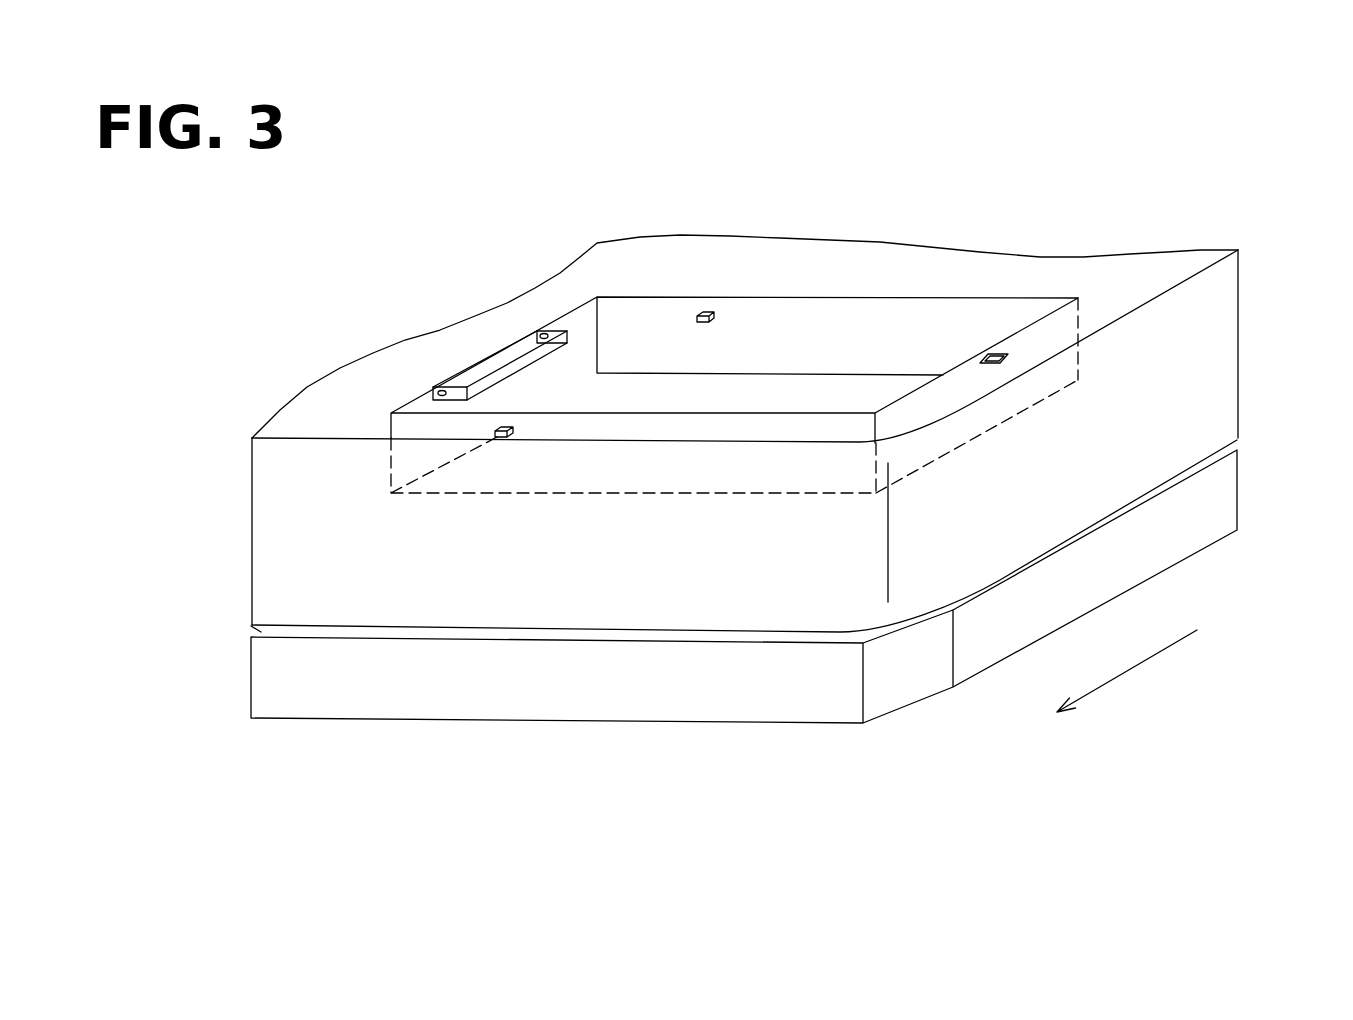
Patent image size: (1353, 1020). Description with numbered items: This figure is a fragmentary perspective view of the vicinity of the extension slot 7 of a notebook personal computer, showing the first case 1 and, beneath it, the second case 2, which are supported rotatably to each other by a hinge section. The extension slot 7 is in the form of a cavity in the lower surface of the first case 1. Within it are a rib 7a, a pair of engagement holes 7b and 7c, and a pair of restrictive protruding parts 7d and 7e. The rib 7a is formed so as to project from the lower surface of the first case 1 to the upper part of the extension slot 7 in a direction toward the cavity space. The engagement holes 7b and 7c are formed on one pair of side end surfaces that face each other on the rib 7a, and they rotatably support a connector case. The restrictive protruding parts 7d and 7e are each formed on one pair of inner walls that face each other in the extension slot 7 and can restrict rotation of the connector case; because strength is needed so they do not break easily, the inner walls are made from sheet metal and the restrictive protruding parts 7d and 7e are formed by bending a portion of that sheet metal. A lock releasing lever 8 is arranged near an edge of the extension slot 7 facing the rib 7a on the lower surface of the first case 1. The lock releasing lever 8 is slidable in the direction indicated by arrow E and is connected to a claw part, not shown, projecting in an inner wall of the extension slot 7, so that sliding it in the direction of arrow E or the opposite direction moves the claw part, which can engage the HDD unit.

The first case 1 is at (1215, 368).
The second case 2 is at (1213, 497).
The extension slot 7 is at (863, 297).
The rib 7a is at (523, 364).
The engagement hole 7b is at (433, 389).
The engagement hole 7c is at (540, 331).
The restrictive protruding part 7d is at (497, 432).
The restrictive protruding part 7e is at (705, 311).
The lock releasing lever 8 is at (990, 353).
The arrow E is at (1140, 667).